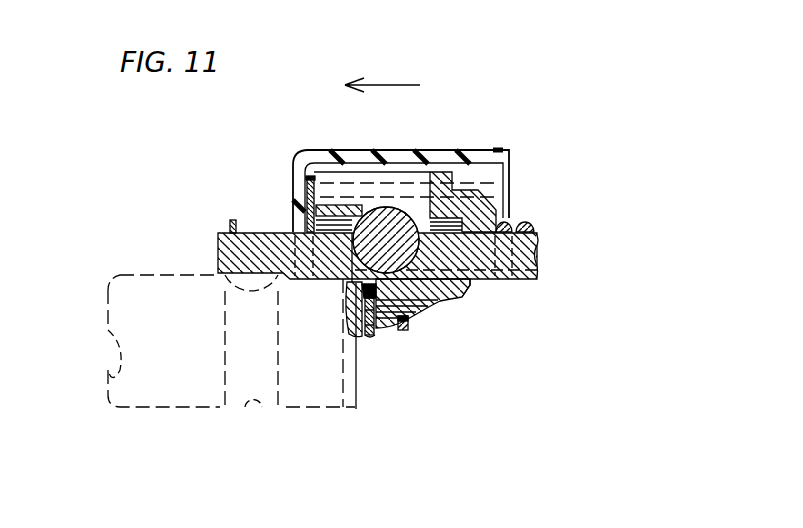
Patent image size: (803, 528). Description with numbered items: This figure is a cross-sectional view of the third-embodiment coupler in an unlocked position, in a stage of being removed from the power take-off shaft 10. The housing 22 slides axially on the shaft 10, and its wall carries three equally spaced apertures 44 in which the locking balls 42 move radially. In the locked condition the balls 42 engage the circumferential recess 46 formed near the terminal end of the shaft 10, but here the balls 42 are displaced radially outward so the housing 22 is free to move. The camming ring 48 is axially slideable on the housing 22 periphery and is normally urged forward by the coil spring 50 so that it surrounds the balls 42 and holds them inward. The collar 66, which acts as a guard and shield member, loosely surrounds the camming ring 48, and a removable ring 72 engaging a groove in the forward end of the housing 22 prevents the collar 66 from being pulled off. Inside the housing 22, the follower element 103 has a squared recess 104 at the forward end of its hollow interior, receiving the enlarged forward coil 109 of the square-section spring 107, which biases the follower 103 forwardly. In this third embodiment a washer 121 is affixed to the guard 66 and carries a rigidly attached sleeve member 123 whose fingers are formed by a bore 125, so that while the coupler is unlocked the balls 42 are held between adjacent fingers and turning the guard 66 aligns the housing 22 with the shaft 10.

The power take-off shaft 10 is at (163, 395).
The housing 22 is at (528, 270).
The locking balls 42 is at (420, 305).
The apertures 44 is at (355, 290).
The circumferential recess 46 is at (254, 400).
The camming ring 48 is at (485, 205).
The coil spring 50 is at (525, 221).
The collar 66 is at (388, 155).
The removable ring 72 is at (232, 220).
The follower element 103 is at (470, 290).
The squared recess 104 is at (365, 300).
The spring 107 is at (403, 331).
The enlarged forward coil 109 is at (378, 335).
The washer 121 is at (305, 183).
The sleeve member 123 is at (338, 205).
The bore 125 is at (398, 212).